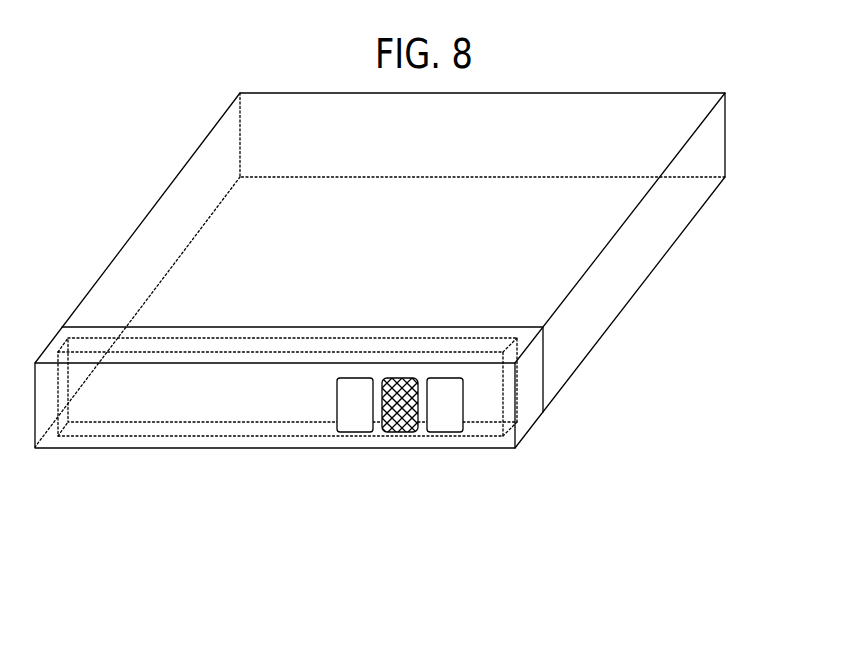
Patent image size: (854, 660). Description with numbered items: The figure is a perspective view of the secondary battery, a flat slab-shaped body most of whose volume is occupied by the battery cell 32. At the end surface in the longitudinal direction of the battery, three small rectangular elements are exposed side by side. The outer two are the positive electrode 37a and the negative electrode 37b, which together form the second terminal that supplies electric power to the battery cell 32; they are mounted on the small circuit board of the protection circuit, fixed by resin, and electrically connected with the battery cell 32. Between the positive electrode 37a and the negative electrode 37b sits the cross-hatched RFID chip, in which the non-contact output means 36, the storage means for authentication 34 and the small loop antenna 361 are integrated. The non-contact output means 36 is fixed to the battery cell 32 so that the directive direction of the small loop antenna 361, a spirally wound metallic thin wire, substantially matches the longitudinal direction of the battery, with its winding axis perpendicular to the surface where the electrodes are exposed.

The battery cell 32 is at (652, 139).
The non-contact output means 36 is at (380, 413).
The storage means for authentication 34 is at (417, 393).
The small loop antenna 361 is at (417, 393).
The positive electrode 37a is at (448, 413).
The negative electrode 37b is at (353, 415).